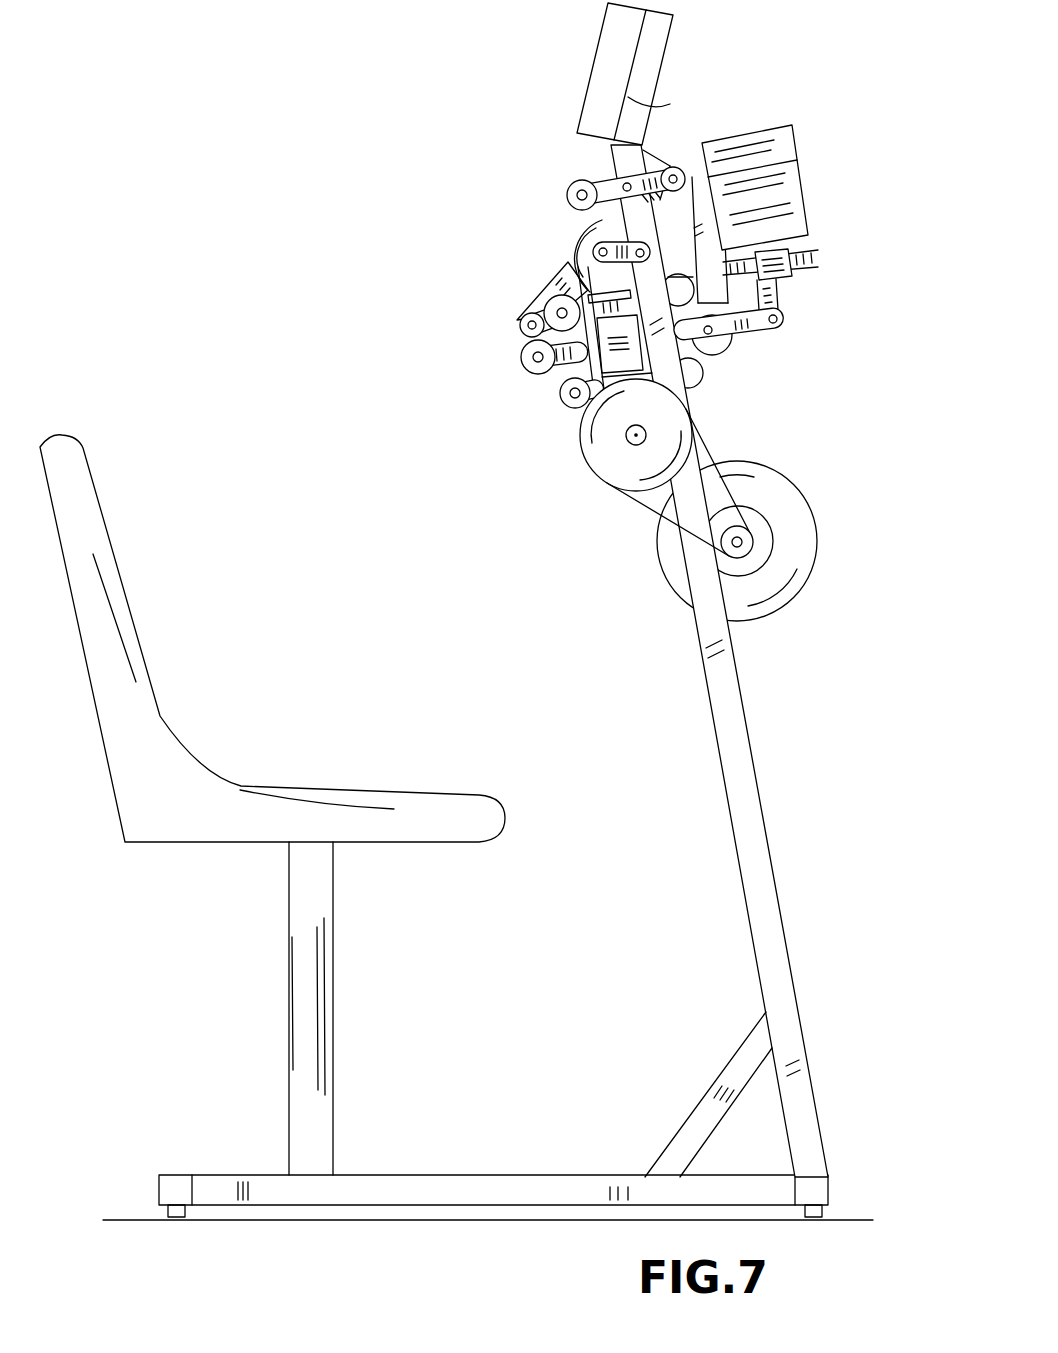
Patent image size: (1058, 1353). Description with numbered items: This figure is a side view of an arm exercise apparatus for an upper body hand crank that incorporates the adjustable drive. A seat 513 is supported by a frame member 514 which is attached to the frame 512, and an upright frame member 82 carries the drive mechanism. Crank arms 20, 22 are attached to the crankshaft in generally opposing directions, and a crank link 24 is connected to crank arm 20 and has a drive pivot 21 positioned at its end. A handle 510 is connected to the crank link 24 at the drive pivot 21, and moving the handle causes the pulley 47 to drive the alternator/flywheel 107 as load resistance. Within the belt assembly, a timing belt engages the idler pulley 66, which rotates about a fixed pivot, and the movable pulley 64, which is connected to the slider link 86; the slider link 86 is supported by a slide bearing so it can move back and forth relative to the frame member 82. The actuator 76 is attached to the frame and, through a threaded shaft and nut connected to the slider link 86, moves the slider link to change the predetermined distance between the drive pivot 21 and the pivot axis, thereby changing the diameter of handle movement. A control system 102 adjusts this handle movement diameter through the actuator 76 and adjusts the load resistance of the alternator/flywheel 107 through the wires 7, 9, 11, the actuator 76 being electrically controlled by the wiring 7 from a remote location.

The control system 102 is at (598, 42).
The wire 9 is at (667, 98).
The wiring 7 is at (678, 147).
The actuator 76 is at (705, 143).
The crank arm 20 is at (616, 147).
The crank link 24 is at (606, 181).
The handle 510 is at (570, 189).
The drive pivot 21 is at (576, 198).
The crank arm 22 is at (543, 285).
The movable pulley 64 is at (525, 372).
The idler pulley 66 is at (558, 398).
The pulley 47 is at (580, 432).
The slider link 86 is at (735, 337).
The wire 11 is at (787, 533).
The alternator/flywheel 107 is at (758, 581).
The frame member 82 is at (760, 797).
The seat 513 is at (102, 525).
The frame member 514 is at (333, 958).
The frame 512 is at (387, 1173).